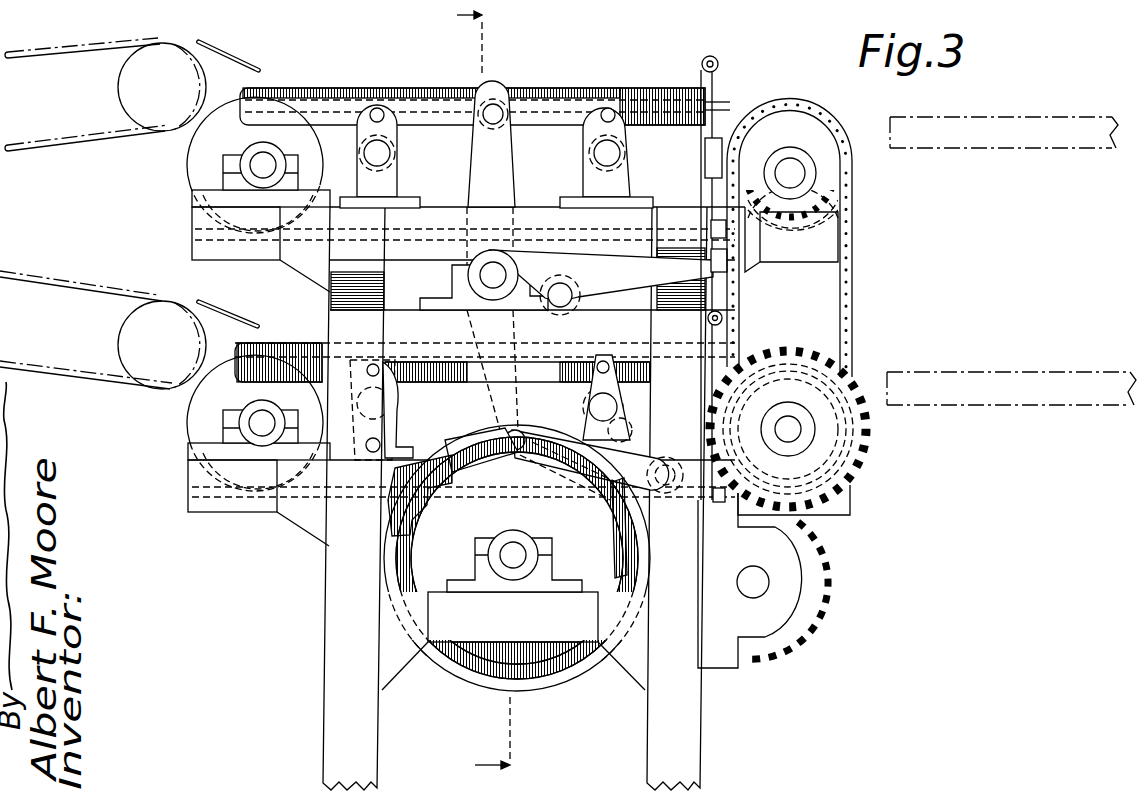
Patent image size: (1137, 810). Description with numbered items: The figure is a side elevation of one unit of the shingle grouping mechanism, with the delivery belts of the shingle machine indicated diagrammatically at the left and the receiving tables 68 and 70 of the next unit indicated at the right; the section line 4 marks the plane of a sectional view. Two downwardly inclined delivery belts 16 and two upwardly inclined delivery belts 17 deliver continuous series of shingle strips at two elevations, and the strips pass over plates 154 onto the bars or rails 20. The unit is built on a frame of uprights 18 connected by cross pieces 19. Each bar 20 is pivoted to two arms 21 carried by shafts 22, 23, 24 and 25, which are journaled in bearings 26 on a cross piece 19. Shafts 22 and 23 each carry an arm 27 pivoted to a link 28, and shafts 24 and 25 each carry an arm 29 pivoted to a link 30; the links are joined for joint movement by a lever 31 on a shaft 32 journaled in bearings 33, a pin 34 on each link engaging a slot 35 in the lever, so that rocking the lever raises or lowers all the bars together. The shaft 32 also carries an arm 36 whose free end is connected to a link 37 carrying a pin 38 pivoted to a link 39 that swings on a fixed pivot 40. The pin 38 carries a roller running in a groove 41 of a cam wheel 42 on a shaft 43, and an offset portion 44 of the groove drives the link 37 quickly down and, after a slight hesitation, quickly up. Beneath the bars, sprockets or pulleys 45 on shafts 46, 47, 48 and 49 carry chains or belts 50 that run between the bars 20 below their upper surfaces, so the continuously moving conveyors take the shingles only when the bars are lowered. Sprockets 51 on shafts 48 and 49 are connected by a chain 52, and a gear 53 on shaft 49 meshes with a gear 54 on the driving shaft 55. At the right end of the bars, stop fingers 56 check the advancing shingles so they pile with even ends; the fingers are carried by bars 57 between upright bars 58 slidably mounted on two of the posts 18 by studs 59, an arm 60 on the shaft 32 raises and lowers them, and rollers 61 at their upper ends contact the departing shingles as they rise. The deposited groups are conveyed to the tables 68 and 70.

The section line 4- 4 is at (470, 392).
The downwardly inclined delivery belts 16 is at (103, 330).
The upwardly inclined delivery belts 17 is at (105, 94).
The plates 154 is at (228, 50).
The uprights 18 is at (325, 731).
The cross pieces 19 is at (262, 513).
The bars or rails 20 is at (330, 92).
The arms 21 is at (385, 390).
The shaft 22 is at (392, 154).
The shaft 23 is at (613, 153).
The shaft 24 is at (412, 398).
The shaft 25 is at (589, 408).
The bearings 26 is at (397, 170).
The arm 27 is at (390, 120).
The link 28 is at (555, 100).
The arm 29 is at (380, 452).
The link 30 is at (440, 430).
The lever 31 is at (503, 190).
The shaft 32 is at (468, 274).
The bearings 33 is at (432, 298).
The pin 34 is at (495, 100).
The slot 35 is at (501, 126).
The arm 36 is at (537, 274).
The link 37 is at (573, 307).
The pin 38 is at (516, 450).
The link 39 is at (580, 467).
The fixed pivot 40 is at (667, 468).
The groove 41 is at (562, 668).
The cam wheel 42 is at (522, 692).
The shaft 43 is at (505, 558).
The offset portion 44 is at (422, 518).
The sprockets or pulleys 45 is at (203, 165).
The shaft 46 is at (264, 163).
The shaft 47 is at (259, 430).
The shaft 48 is at (803, 174).
The shaft 49 is at (801, 431).
The chains or belts 50 is at (198, 154).
The sprockets 51 is at (847, 198).
The chain 52 is at (854, 288).
The gear 53 is at (837, 490).
The gear 54 is at (830, 576).
The driving shaft 55 is at (763, 592).
The stop finger 56 is at (704, 72).
The bars 57 is at (712, 160).
The upright bars 58 is at (728, 303).
The studs 59 is at (711, 226).
The arm 60 is at (637, 270).
The rollers 61 is at (708, 57).
The support or table 68 is at (1025, 150).
The support or table 70 is at (1030, 377).